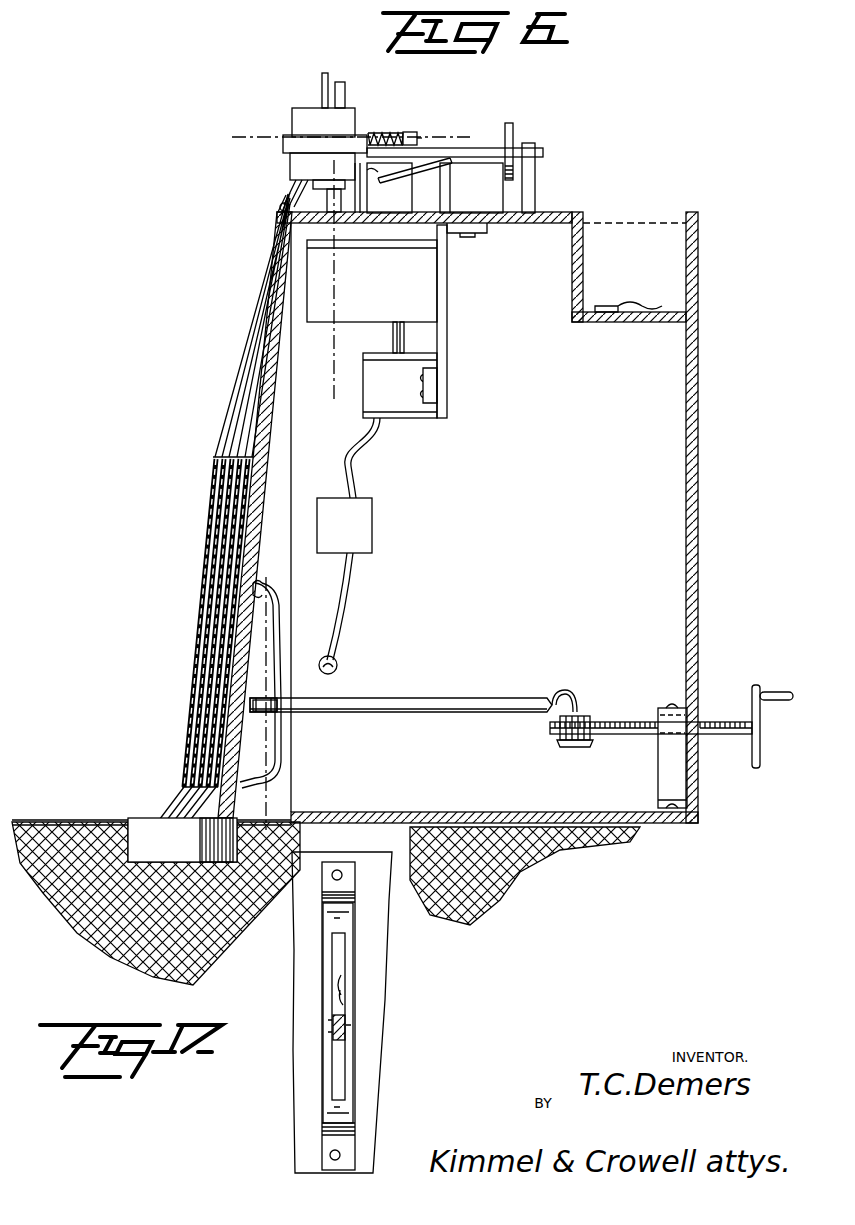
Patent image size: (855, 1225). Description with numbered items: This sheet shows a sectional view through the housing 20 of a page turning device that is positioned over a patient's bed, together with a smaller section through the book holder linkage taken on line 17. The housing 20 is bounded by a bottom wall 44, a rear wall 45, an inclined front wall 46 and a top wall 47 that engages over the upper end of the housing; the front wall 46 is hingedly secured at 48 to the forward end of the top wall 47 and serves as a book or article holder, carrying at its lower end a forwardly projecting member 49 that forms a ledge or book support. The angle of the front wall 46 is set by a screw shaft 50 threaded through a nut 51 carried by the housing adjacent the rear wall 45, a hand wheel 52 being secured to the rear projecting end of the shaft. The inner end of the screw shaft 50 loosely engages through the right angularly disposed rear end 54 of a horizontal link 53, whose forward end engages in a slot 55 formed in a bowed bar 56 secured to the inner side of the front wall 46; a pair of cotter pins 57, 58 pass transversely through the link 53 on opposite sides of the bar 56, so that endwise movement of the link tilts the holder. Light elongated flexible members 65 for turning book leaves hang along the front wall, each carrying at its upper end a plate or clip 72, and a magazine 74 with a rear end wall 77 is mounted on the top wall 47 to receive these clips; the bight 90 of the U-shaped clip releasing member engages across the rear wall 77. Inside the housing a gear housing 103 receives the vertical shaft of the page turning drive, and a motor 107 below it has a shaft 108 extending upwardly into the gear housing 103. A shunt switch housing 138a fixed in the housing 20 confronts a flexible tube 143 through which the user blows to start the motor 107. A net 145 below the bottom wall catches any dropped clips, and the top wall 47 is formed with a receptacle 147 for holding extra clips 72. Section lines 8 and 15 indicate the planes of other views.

In FIG. 6, the section line 8- 8 is at (253, 136).
In FIG. 6, the section line 15- 15 is at (373, 230).
In FIG. 6, the section line 17- 17 is at (273, 587).
In FIG. 6, the housing 20 is at (453, 497).
In FIG. 6, the bottom wall 44 is at (470, 812).
In FIG. 6, the rear wall 45 is at (687, 492).
In FIG. 6, the front wall 46 is at (267, 368).
In FIG. 6, the top wall 47 is at (558, 213).
In FIG. 6, the hinge 48 is at (290, 195).
In FIG. 6, the forwardly projecting member 49 is at (187, 795).
In FIG. 6, the screw shaft 50 is at (620, 720).
In FIG. 6, the nut 51 is at (668, 708).
In FIG. 6, the hand wheel 52 is at (750, 752).
In FIG. 6, the link 53 is at (448, 702).
In FIG. 17, the link 53 is at (340, 1022).
In FIG. 6, the right angularly disposed rear end 54 is at (578, 710).
In FIG. 17, the slot 55 is at (343, 985).
In FIG. 6, the bowed bar 56 is at (267, 763).
In FIG. 17, the bowed bar 56 is at (347, 1070).
In FIG. 6, the cotter pin 57 is at (277, 705).
In FIG. 6, the cotter pin 58 is at (256, 712).
In FIG. 6, the elongated flexible member 65 is at (228, 423).
In FIG. 6, the plate 72 is at (597, 308).
In FIG. 6, the magazine 74 is at (297, 110).
In FIG. 6, the rear end wall 77 is at (353, 117).
In FIG. 6, the bight 90 is at (367, 133).
In FIG. 6, the gear housing 103 is at (430, 270).
In FIG. 6, the motor 107 is at (412, 402).
In FIG. 6, the shaft 108 is at (402, 340).
In FIG. 6, the housing 138a is at (373, 527).
In FIG. 6, the flexible tube 143 is at (342, 602).
In FIG. 6, the net 145 is at (95, 810).
In FIG. 6, the receptacle 147 is at (587, 248).